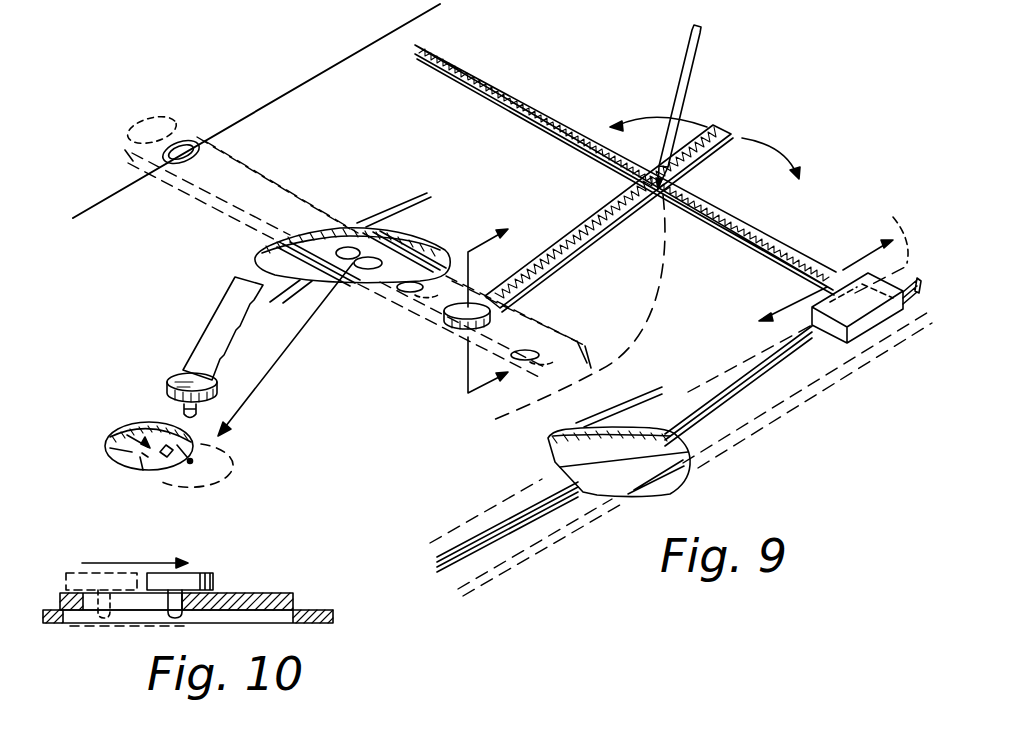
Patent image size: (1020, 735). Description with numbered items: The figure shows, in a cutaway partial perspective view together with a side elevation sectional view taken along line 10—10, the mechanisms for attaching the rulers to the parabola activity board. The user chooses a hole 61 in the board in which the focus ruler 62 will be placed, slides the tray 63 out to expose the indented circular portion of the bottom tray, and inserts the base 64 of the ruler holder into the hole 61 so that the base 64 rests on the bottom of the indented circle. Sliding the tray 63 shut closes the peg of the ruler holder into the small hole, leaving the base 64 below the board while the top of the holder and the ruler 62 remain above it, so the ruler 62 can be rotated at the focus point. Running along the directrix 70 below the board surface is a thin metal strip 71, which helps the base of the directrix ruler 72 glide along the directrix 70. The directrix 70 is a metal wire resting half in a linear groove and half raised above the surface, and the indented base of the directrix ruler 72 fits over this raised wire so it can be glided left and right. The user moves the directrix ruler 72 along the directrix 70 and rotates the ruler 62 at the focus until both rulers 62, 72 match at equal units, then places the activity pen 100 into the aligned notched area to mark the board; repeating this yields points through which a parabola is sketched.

In FIG. 9, the hole 61 is at (130, 450).
In FIG. 9, the focus ruler 62 is at (600, 240).
In FIG. 10, the focus ruler 62 is at (66, 575).
In FIG. 9, the tray 63 is at (183, 134).
In FIG. 10, the tray 63 is at (310, 610).
In FIG. 9, the base 64 is at (181, 412).
In FIG. 10, the base 64 is at (197, 618).
In FIG. 9, the directrix 70 is at (799, 358).
In FIG. 9, the thin metal strip 71 is at (632, 445).
In FIG. 9, the directrix ruler 72 is at (709, 208).
In FIG. 9, the activity pen 100 is at (690, 75).
In FIG. 9, the section line 10— 10 is at (466, 324).